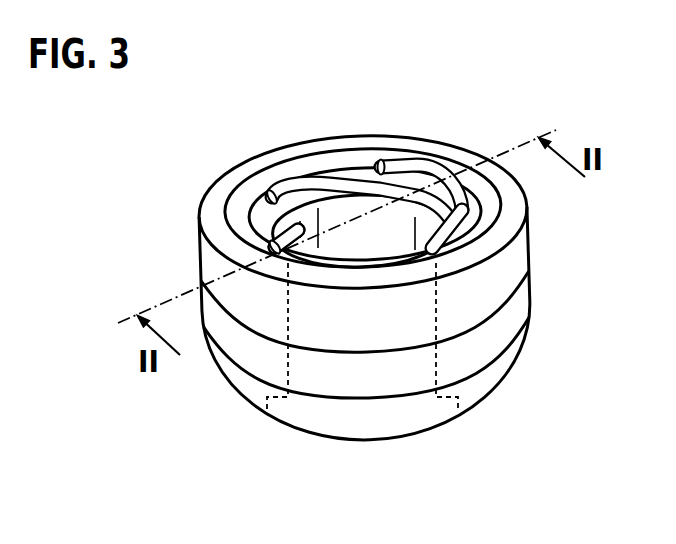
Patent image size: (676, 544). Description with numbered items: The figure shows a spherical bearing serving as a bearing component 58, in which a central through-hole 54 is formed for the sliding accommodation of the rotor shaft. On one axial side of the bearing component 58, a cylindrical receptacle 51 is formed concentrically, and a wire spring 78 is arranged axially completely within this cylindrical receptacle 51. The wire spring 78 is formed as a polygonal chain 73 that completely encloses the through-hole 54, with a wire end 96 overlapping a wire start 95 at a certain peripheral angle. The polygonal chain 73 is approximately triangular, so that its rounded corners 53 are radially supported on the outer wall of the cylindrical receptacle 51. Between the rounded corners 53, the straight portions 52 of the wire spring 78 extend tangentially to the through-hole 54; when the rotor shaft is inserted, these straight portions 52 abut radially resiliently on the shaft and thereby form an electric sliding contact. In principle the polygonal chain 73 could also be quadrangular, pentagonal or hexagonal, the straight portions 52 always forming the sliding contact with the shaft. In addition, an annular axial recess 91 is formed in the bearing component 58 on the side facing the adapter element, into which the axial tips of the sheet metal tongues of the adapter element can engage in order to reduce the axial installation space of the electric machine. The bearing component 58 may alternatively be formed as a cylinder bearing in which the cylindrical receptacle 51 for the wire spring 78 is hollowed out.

The bearing component 58 is at (341, 263).
The cylindrical receptacle 51 is at (353, 160).
The wire start 95 is at (395, 157).
The central through-hole 54 is at (333, 218).
The rounded corners 53 is at (265, 207).
The polygonal chain 73 is at (272, 220).
The wire spring 78 is at (283, 242).
The wire end 96 is at (467, 237).
The straight portions 52 is at (291, 258).
The annular axial recess 91 is at (443, 405).